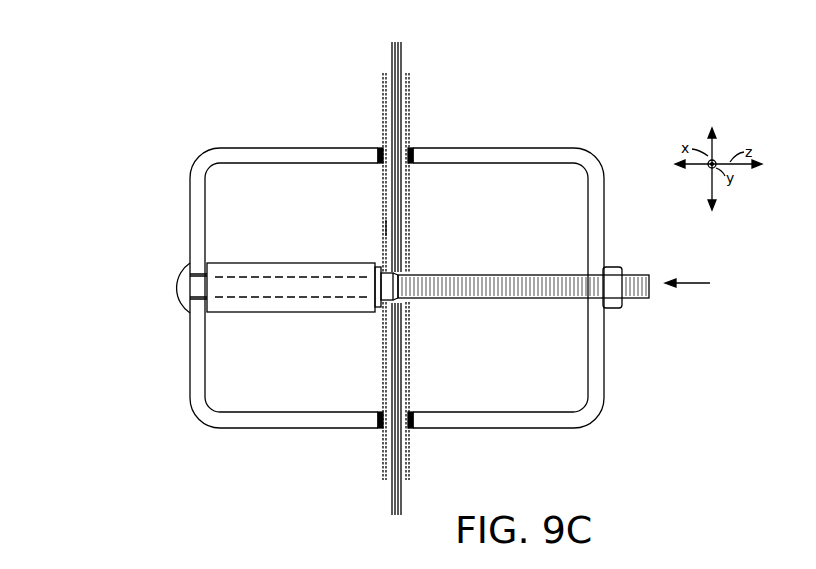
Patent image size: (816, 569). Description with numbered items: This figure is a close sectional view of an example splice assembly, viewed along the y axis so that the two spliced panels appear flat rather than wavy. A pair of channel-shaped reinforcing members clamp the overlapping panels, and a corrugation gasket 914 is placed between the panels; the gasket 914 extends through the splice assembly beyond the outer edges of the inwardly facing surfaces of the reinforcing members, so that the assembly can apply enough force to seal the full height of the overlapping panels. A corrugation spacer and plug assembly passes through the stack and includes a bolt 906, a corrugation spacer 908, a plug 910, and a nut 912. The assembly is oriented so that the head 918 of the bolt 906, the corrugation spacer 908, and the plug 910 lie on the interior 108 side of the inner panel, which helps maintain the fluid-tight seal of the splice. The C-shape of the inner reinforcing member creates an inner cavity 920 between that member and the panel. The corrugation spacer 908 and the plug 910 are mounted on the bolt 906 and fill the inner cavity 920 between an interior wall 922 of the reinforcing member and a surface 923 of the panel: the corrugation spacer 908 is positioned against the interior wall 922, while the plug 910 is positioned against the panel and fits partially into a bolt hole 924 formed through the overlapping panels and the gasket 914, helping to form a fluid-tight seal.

The interior 108 is at (68, 373).
The bolt 906 is at (519, 268).
The corrugation spacer 908 is at (246, 270).
The plug 910 is at (378, 312).
The nut 912 is at (614, 268).
The corrugation gasket 914 is at (397, 48).
The head 918 is at (178, 285).
The inner cavity 920 is at (284, 362).
The interior wall 922 is at (206, 222).
The surface 923 is at (382, 228).
The bolt hole 924 is at (422, 269).